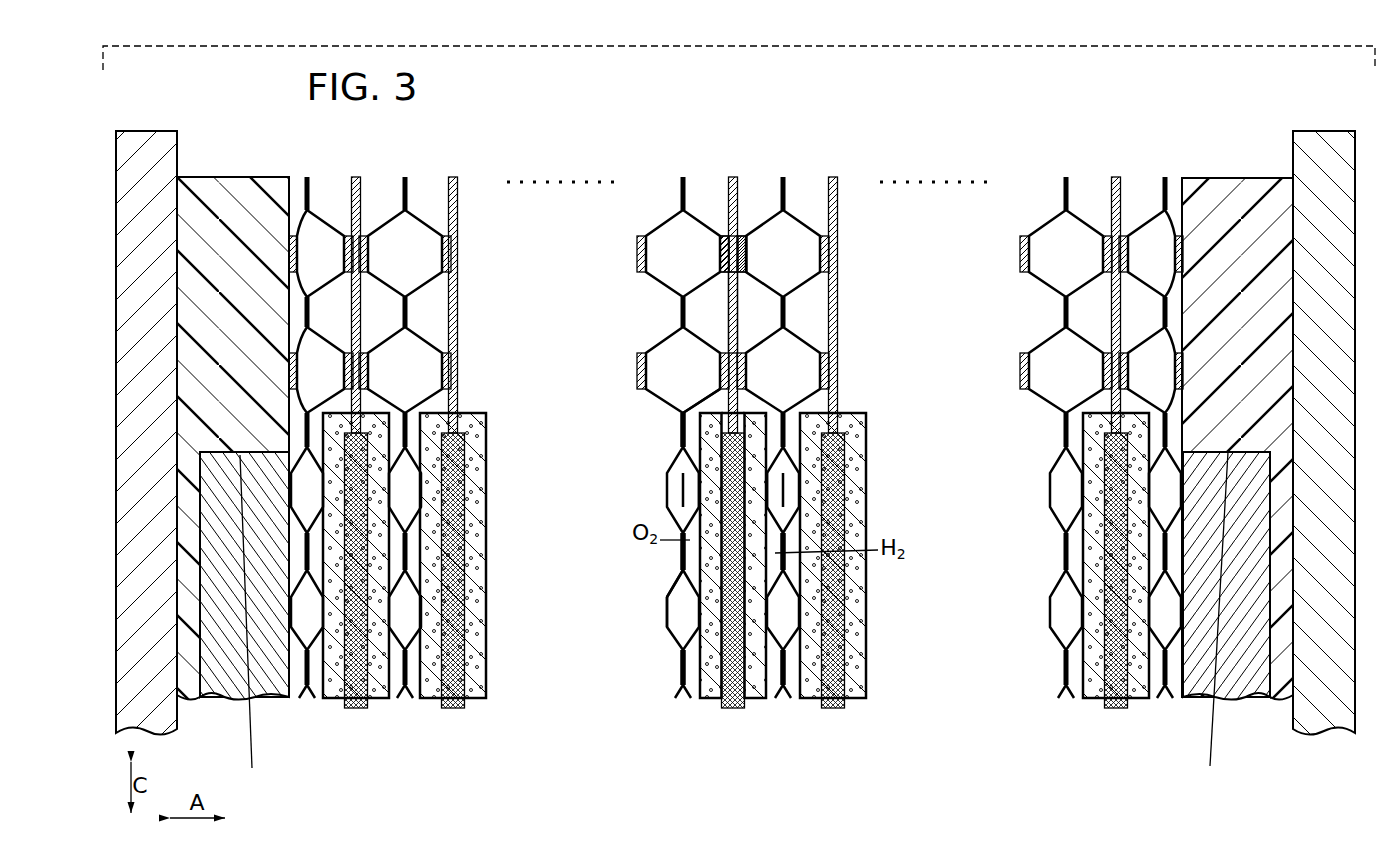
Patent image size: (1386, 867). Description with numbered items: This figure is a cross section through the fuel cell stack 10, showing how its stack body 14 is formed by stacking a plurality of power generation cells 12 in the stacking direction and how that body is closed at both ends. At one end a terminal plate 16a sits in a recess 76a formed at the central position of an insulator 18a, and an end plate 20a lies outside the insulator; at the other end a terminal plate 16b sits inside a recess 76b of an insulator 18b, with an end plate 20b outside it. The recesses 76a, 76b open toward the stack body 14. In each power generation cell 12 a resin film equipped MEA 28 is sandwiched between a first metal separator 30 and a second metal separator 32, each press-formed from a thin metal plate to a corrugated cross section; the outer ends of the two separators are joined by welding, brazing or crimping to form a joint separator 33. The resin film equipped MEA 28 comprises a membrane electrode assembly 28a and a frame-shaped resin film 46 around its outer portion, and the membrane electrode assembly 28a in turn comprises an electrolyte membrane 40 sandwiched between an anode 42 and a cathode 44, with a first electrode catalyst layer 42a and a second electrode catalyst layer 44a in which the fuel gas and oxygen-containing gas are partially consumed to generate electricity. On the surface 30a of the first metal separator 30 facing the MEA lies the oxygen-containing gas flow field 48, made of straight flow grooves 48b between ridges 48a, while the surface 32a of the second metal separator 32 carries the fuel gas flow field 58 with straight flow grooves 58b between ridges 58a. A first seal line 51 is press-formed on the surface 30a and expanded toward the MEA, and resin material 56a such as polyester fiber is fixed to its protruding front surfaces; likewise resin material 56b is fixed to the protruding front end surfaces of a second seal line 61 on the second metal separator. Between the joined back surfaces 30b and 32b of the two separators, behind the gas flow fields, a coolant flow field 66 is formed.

The fuel cell stack 10 is at (500, 113).
The power generation cell 12 is at (307, 708).
The stack body 14 is at (693, 820).
The terminal plate 16a is at (222, 699).
The terminal plate 16b is at (1253, 688).
The insulator 18a is at (214, 175).
The insulator 18b is at (1262, 175).
The end plate 20a is at (138, 128).
The end plate 20b is at (1330, 128).
The resin film equipped MEA 28 is at (736, 481).
The membrane electrode assembly 28a is at (721, 679).
The first metal separator 30 is at (754, 460).
The surface of the first metal separator 30a is at (697, 415).
The surface of the first metal separator 30b is at (712, 405).
The second metal separator 32 is at (659, 225).
The surface of the second metal separator 32a is at (668, 592).
The surface of the second metal separator 32b is at (672, 598).
The joint separator 33 is at (735, 444).
The electrolyte membrane 40 is at (735, 712).
The anode 42 is at (755, 703).
The first electrode catalyst layer 42a is at (760, 597).
The cathode 44 is at (712, 703).
The second electrode catalyst layer 44a is at (740, 482).
The resin film 46 is at (740, 294).
The oxygen-containing gas flow field 48 is at (697, 666).
The ridge 48a is at (697, 500).
The straight flow groove 48b is at (695, 550).
The first seal line 51 is at (745, 250).
The resin material 56a is at (726, 253).
The resin material 56b is at (743, 262).
The fuel gas flow field 58 is at (773, 665).
The ridge 58a is at (773, 500).
The straight flow groove 58b is at (773, 560).
The second seal line 61 is at (735, 262).
The coolant flow field 66 is at (783, 493).
The recess 76a is at (254, 622).
The recess 76b is at (1206, 620).